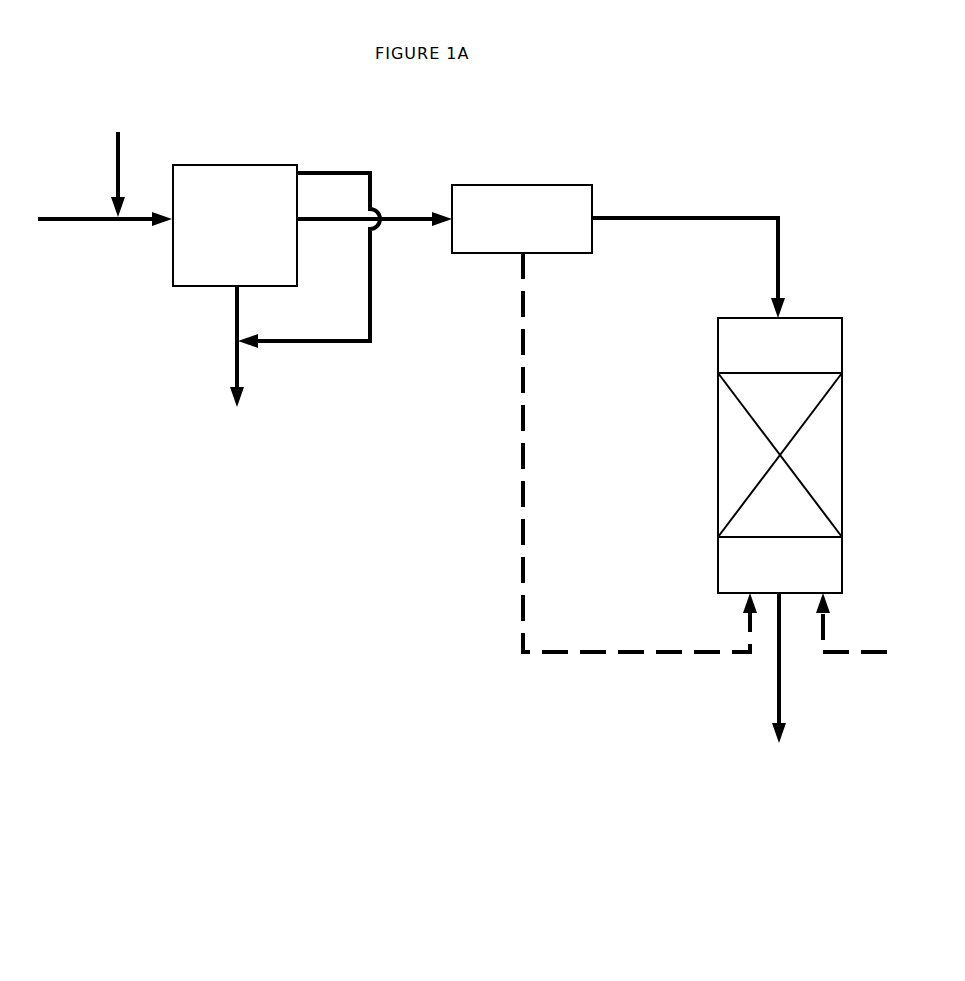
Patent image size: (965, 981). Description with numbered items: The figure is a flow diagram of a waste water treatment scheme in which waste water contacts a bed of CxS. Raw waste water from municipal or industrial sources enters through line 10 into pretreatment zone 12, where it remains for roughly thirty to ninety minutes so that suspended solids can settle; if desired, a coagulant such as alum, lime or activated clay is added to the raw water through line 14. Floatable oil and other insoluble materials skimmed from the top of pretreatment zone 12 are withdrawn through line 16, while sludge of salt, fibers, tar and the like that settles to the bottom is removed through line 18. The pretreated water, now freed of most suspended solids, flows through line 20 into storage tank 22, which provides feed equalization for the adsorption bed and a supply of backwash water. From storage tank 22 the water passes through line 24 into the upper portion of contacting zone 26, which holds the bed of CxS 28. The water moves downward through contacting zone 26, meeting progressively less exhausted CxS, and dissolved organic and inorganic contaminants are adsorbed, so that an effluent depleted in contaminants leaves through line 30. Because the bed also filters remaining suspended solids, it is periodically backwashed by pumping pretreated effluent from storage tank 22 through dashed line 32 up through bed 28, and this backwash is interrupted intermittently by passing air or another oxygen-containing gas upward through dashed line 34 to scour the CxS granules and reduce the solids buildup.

The line 10 is at (73, 221).
The pretreatment zone 12 is at (235, 225).
The line 14 is at (120, 148).
The line 16 is at (334, 173).
The line 18 is at (233, 368).
The line 20 is at (400, 215).
The storage tank 22 is at (522, 219).
The line 24 is at (700, 216).
The contacting zone 26 is at (834, 317).
The bed of CxS 28 is at (835, 433).
The line 30 is at (782, 703).
The dashed line 32 is at (526, 527).
The dashed line 34 is at (850, 649).